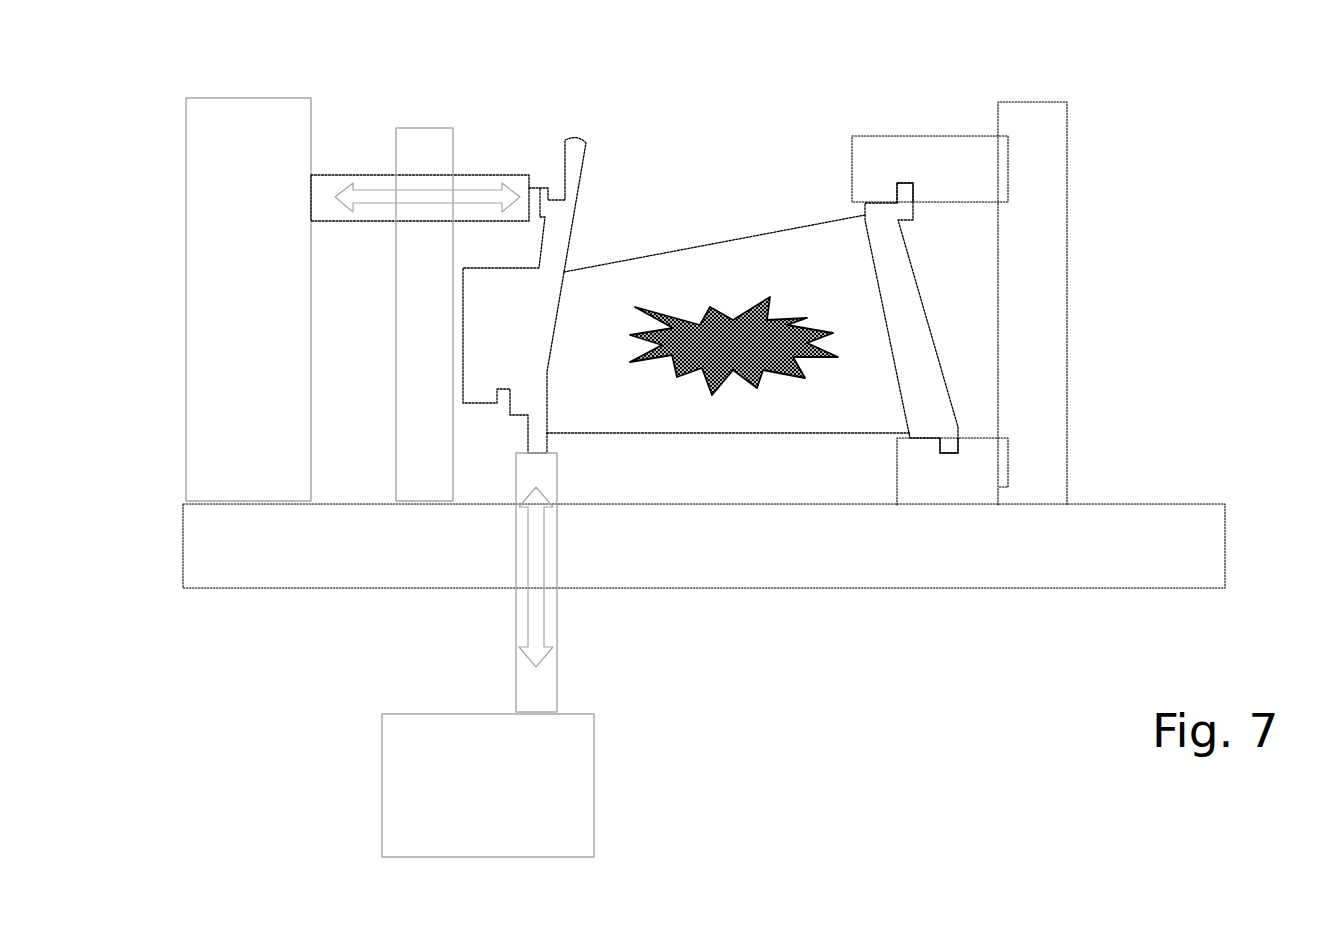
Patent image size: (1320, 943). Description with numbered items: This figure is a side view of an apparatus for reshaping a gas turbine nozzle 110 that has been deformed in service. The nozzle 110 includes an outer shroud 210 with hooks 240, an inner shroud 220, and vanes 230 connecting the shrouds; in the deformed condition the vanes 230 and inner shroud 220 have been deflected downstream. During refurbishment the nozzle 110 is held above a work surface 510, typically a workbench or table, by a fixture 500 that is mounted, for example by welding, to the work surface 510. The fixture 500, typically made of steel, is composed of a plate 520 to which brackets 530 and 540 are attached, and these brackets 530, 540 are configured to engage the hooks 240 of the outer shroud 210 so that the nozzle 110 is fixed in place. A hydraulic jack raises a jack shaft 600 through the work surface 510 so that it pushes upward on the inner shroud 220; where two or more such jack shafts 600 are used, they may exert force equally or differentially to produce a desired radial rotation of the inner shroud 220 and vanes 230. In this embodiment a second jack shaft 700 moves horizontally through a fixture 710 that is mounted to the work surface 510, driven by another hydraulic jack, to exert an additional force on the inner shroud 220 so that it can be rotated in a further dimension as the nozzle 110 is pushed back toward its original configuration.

The nozzle 110 is at (742, 218).
The outer shroud 210 is at (925, 353).
The inner shroud 220 is at (553, 218).
The vanes 230 is at (642, 275).
The hooks 240 is at (902, 192).
The fixture 500 is at (704, 357).
The work surface 510 is at (705, 560).
The plate 520 is at (1049, 289).
The bracket 530 is at (914, 150).
The bracket 540 is at (962, 477).
The jack shaft 600 is at (543, 678).
The jack shaft 700 is at (325, 202).
The fixture 710 is at (424, 314).